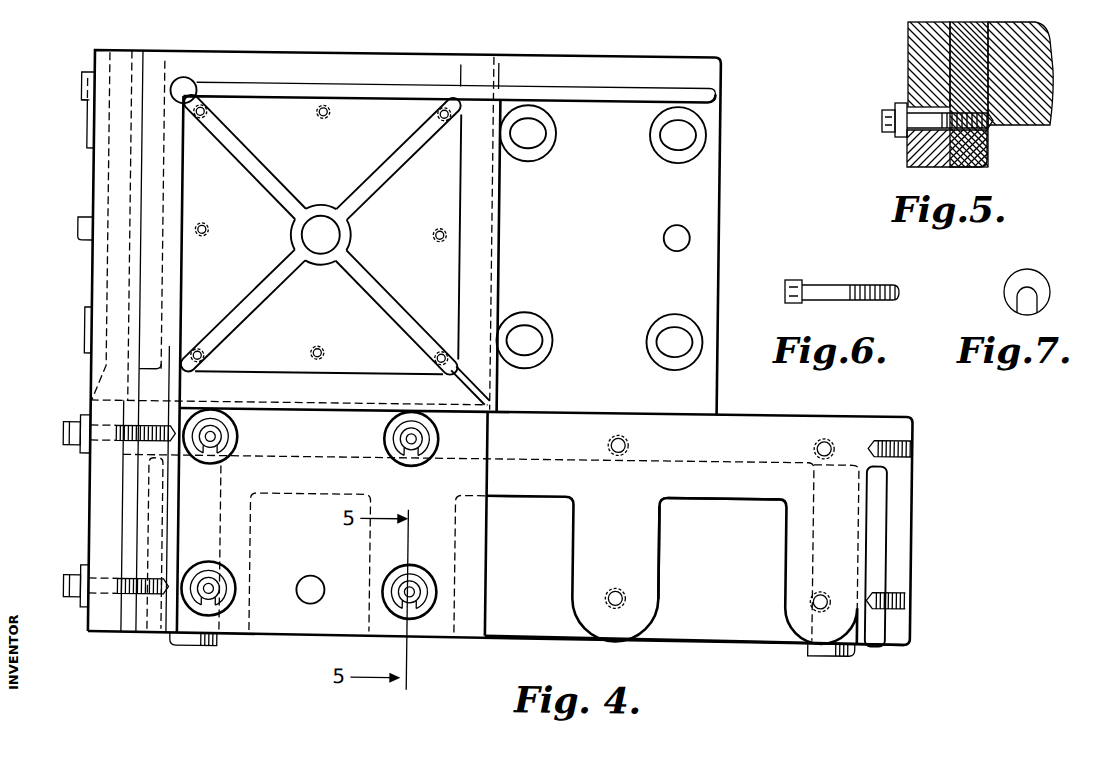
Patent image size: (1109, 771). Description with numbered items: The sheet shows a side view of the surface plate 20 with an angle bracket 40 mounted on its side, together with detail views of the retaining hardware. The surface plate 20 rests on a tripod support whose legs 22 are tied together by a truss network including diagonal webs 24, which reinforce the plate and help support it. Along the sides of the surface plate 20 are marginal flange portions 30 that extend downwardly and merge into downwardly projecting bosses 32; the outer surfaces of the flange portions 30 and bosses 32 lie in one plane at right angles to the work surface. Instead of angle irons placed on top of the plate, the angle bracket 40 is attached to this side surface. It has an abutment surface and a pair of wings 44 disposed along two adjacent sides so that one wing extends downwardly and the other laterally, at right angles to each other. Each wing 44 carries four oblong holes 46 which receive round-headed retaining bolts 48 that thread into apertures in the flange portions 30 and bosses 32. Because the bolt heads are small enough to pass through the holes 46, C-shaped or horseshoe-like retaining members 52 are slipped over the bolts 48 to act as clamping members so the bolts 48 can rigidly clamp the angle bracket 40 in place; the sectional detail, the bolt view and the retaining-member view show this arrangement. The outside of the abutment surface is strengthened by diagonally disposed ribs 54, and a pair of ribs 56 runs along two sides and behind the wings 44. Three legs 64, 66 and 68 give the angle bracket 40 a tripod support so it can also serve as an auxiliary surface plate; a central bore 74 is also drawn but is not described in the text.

In FIG. 4, the surface plate 20 is at (906, 418).
In FIG. 5, the surface plate 20 is at (1040, 84).
In FIG. 4, the legs 22 is at (204, 637).
In FIG. 4, the diagonal webs 24 is at (717, 633).
In FIG. 4, the marginal flange portions 30 is at (728, 490).
In FIG. 4, the bosses 32 is at (654, 595).
In FIG. 5, the bosses 32 is at (990, 150).
In FIG. 4, the angle bracket 40 is at (128, 63).
In FIG. 4, the wings 44 is at (710, 66).
In FIG. 5, the wings 44 is at (917, 32).
In FIG. 4, the holes 46 is at (533, 130).
In FIG. 4, the retaining bolts 48 is at (423, 441).
In FIG. 5, the retaining bolts 48 is at (885, 110).
In FIG. 6, the retaining bolts 48 is at (797, 282).
In FIG. 4, the retaining members 52 is at (225, 434).
In FIG. 5, the retaining members 52 is at (902, 105).
In FIG. 7, the retaining members 52 is at (1040, 285).
In FIG. 4, the diagonally disposed ribs 54 is at (258, 158).
In FIG. 4, the ribs 56 is at (365, 92).
In FIG. 4, the leg 64 is at (186, 80).
In FIG. 4, the leg 66 is at (317, 585).
In FIG. 4, the leg 68 is at (677, 226).
In FIG. 4, the central bore 74 is at (318, 222).